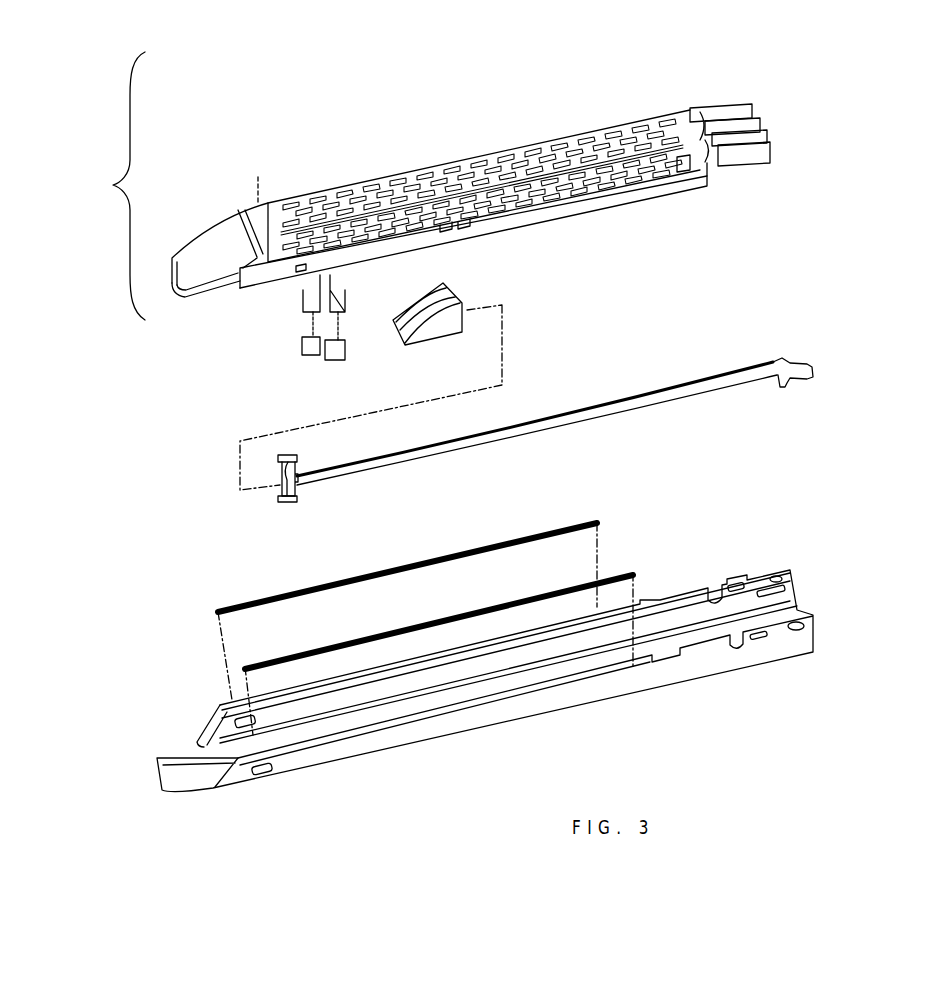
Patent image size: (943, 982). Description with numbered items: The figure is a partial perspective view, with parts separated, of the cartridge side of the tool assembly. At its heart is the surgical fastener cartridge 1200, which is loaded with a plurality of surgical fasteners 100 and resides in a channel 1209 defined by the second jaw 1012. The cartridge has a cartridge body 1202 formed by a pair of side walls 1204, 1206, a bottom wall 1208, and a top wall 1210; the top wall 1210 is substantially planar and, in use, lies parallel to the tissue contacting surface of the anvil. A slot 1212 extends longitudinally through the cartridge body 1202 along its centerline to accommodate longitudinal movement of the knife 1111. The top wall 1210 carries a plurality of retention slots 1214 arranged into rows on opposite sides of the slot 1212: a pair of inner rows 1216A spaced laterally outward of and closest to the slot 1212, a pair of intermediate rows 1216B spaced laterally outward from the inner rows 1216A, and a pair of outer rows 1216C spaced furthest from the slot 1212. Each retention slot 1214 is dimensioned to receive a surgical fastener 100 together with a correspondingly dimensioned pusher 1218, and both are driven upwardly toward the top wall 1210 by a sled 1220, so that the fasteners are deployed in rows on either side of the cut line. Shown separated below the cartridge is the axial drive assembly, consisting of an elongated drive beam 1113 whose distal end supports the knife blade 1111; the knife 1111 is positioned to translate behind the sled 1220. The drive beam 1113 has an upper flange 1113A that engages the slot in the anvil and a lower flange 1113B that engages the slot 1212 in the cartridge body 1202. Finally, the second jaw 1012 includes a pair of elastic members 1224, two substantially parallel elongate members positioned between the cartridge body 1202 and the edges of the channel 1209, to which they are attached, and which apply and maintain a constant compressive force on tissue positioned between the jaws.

The surgical fastener cartridge 1200 is at (102, 186).
The cartridge body 1202 is at (222, 158).
The side wall 1204 is at (378, 179).
The retention slots 1214 is at (274, 210).
The top wall 1210 is at (262, 205).
The slot 1212 is at (248, 278).
The side wall 1206 is at (512, 214).
The bottom wall 1208 is at (621, 197).
The inner rows 1216A is at (700, 106).
The intermediate rows 1216B is at (660, 124).
The outer rows 1216C is at (670, 112).
The surgical fastener 100 is at (342, 293).
The pusher 1218 is at (337, 362).
The sled 1220 is at (460, 290).
The elongated drive beam 1113 is at (563, 427).
The knife blade 1111 is at (285, 478).
The upper flange 1113A is at (290, 455).
The lower flange 1113B is at (290, 503).
The elastic members 1224 is at (618, 505).
The second jaw 1012 is at (231, 703).
The channel 1209 is at (308, 735).